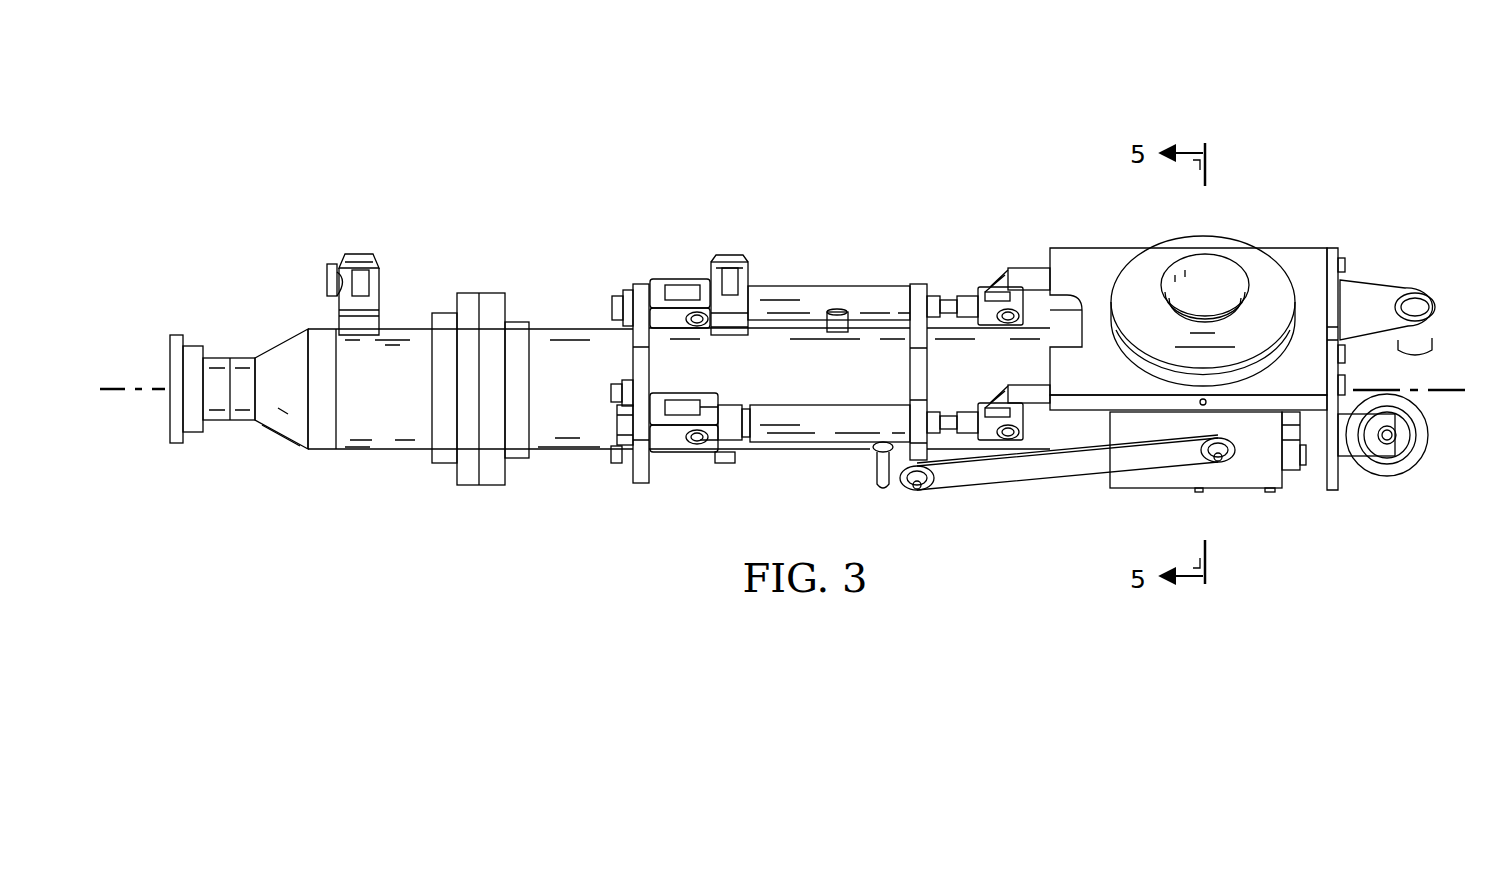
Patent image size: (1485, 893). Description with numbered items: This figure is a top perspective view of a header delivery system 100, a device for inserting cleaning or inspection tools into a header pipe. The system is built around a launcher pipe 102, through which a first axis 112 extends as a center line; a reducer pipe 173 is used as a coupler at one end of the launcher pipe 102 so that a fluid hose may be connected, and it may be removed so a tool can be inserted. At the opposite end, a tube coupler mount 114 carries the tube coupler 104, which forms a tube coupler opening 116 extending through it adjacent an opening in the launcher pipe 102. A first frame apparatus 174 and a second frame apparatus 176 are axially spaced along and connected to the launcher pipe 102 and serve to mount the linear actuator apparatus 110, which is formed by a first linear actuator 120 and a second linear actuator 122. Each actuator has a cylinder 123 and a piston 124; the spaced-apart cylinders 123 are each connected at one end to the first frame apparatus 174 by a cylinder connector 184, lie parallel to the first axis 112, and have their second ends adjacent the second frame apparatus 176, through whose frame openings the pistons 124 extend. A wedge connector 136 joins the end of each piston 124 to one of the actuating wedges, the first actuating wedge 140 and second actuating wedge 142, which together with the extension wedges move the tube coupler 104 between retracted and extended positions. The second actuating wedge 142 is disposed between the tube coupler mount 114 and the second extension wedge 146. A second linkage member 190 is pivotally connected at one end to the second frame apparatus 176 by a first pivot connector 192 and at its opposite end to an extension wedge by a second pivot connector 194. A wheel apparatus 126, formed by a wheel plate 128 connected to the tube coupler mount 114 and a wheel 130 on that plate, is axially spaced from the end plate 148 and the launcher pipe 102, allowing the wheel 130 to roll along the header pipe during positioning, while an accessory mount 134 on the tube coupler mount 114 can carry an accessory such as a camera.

The header delivery system 100 is at (546, 87).
The launcher pipe 102 is at (572, 323).
The tube coupler 104 is at (1152, 250).
The linear actuator apparatus 110 is at (781, 281).
The first axis 112 is at (162, 388).
The tube coupler mount 114 is at (1305, 258).
The tube coupler opening 116 is at (1222, 263).
The first linear actuator 120 is at (862, 283).
The second linear actuator 122 is at (787, 447).
The cylinder 123 is at (823, 296).
The piston 124 is at (950, 298).
The wheel apparatus 126 is at (1342, 252).
The wheel plate 128 is at (1332, 492).
The wheel 130 is at (1408, 470).
The accessory mount 134 is at (1395, 282).
The wedge connector 136 is at (985, 287).
The first actuating wedge 140 is at (1023, 266).
The second actuating wedge 142 is at (1063, 427).
The second extension wedge 146 is at (1173, 474).
The end plate 148 is at (1292, 470).
The reducer pipe 173 is at (283, 442).
The first frame apparatus 174 is at (640, 489).
The second frame apparatus 176 is at (919, 282).
The cylinder connector 184 is at (676, 281).
The second linkage member 190 is at (990, 478).
The first pivot connector 192 is at (917, 493).
The second pivot connector 194 is at (1218, 464).